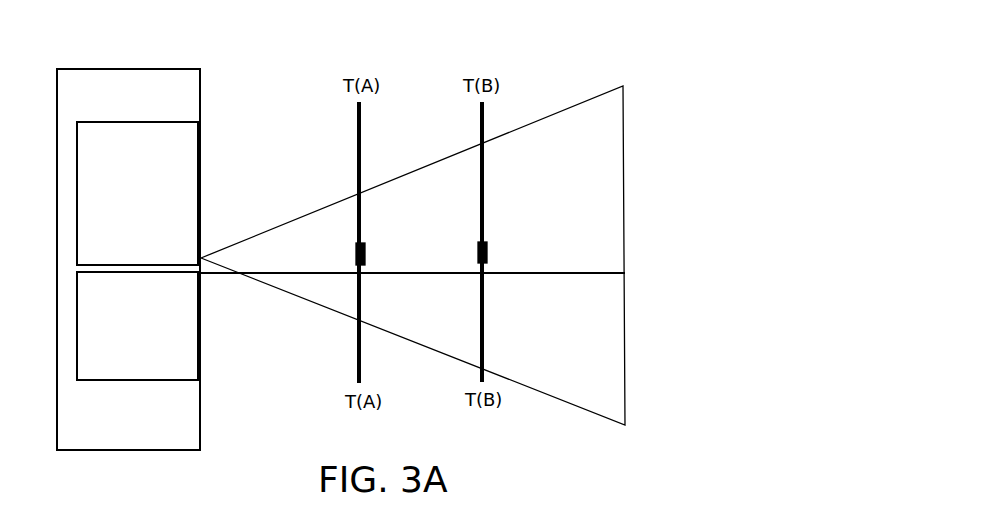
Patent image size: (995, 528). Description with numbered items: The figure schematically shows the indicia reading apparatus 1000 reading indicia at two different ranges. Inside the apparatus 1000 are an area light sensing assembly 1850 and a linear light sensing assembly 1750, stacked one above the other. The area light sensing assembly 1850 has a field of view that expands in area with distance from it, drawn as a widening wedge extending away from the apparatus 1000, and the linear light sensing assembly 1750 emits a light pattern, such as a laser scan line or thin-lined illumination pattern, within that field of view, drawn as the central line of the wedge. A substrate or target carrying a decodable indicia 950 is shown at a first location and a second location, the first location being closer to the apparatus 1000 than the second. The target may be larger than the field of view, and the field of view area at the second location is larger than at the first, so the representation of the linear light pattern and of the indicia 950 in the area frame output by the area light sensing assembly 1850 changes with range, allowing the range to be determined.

The apparatus 1000 is at (96, 68).
The area light sensing assembly 1850 is at (111, 122).
The linear light sensing assembly 1750 is at (140, 380).
The decodable indicia 950 is at (355, 253).